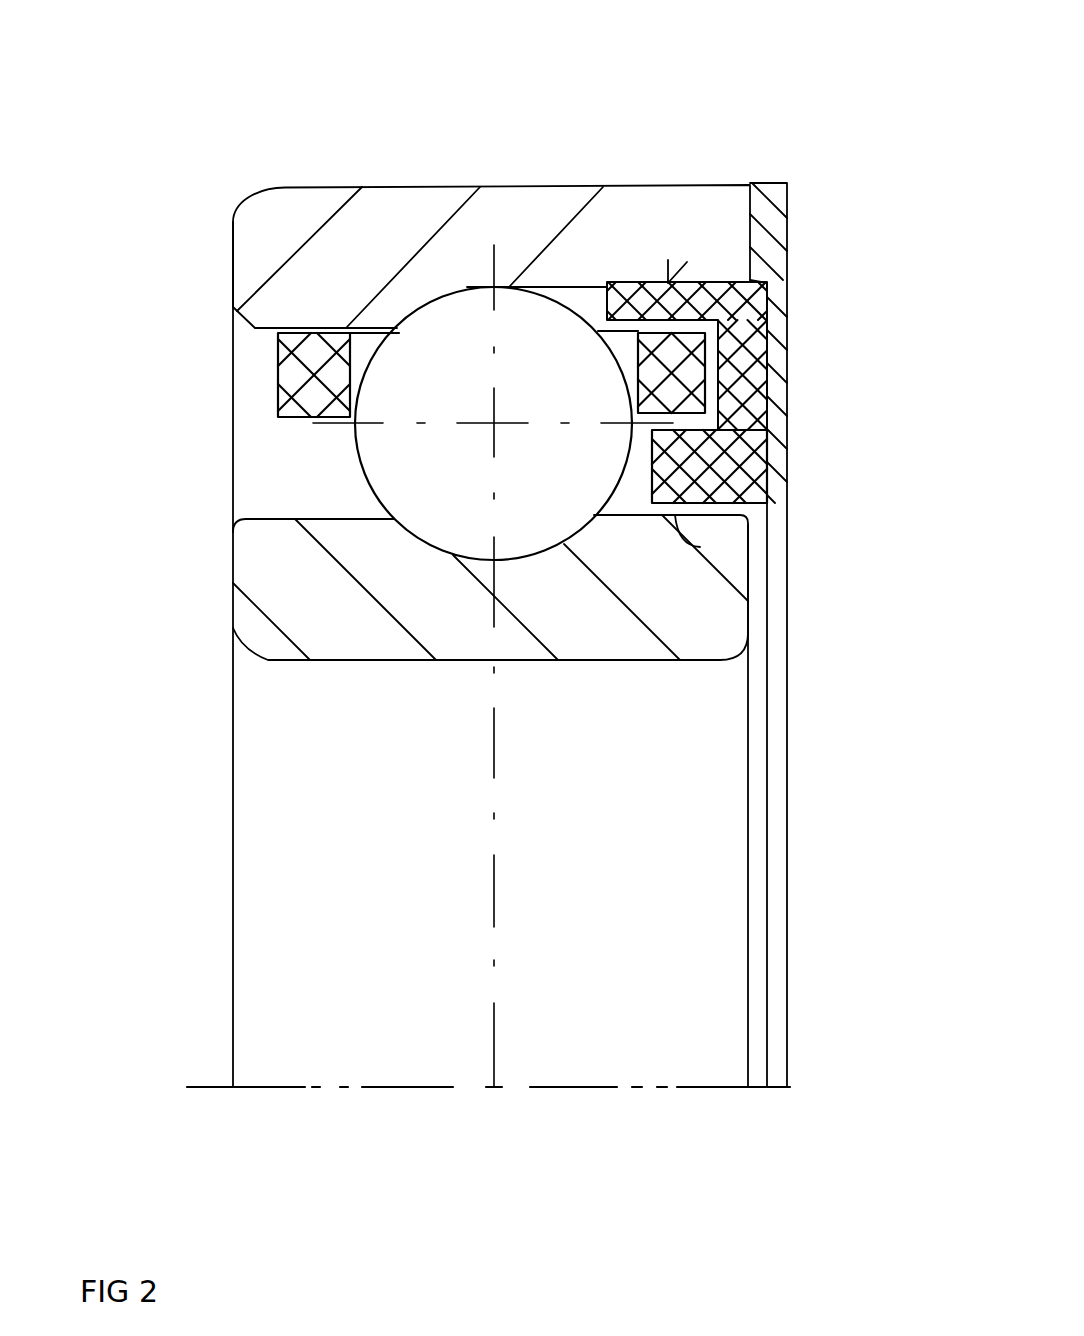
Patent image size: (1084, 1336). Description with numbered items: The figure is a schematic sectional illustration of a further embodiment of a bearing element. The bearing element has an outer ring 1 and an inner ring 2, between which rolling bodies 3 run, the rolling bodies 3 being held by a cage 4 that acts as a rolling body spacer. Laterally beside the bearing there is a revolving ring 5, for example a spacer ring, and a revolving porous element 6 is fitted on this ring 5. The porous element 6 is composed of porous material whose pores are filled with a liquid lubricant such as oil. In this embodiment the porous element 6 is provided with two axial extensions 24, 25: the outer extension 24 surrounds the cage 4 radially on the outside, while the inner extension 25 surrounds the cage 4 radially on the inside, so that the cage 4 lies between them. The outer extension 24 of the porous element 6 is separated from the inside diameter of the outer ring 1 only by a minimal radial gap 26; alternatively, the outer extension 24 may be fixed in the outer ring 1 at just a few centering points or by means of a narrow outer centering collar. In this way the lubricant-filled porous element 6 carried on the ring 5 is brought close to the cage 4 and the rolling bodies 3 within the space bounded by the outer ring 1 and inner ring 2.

The outer ring 1 is at (643, 193).
The inner ring 2 is at (720, 623).
The rolling bodies 3 is at (522, 313).
The cage 4 is at (767, 356).
The ring 5 is at (778, 247).
The porous element 6 is at (730, 461).
The outer extension 24 is at (687, 283).
The inner extension 25 is at (700, 547).
The radial gap 26 is at (633, 283).